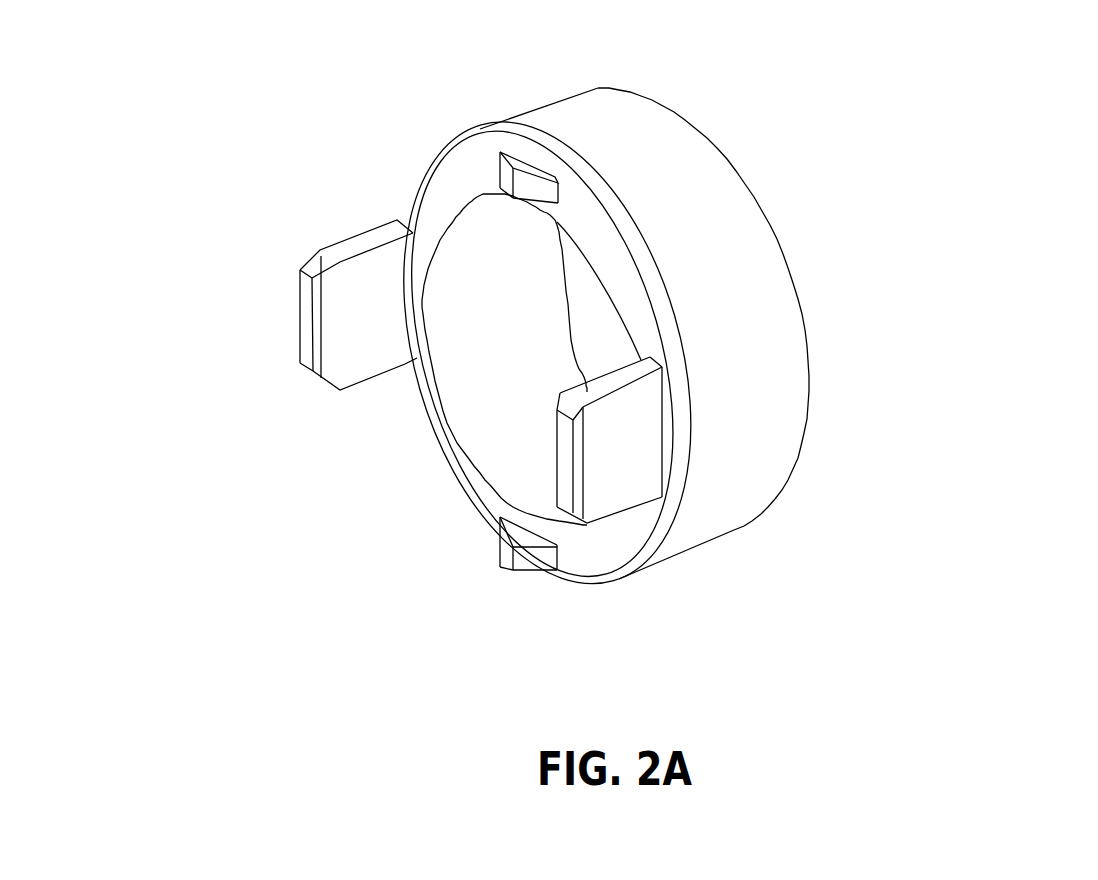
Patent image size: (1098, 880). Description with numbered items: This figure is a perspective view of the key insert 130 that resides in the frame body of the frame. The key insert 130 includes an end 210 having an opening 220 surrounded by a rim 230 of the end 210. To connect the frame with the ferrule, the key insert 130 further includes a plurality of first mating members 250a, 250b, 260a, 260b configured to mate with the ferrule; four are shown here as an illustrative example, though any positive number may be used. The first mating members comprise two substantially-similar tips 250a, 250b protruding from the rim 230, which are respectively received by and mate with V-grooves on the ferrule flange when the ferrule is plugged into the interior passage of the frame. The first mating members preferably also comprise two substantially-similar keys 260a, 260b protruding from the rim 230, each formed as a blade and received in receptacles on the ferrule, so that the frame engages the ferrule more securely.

The key insert 130 is at (996, 156).
The end 210 is at (490, 376).
The opening 220 is at (518, 407).
The rim 230 is at (300, 367).
The tip 250a is at (537, 119).
The tip 250b is at (513, 603).
The key 260a is at (736, 489).
The key 260b is at (302, 257).